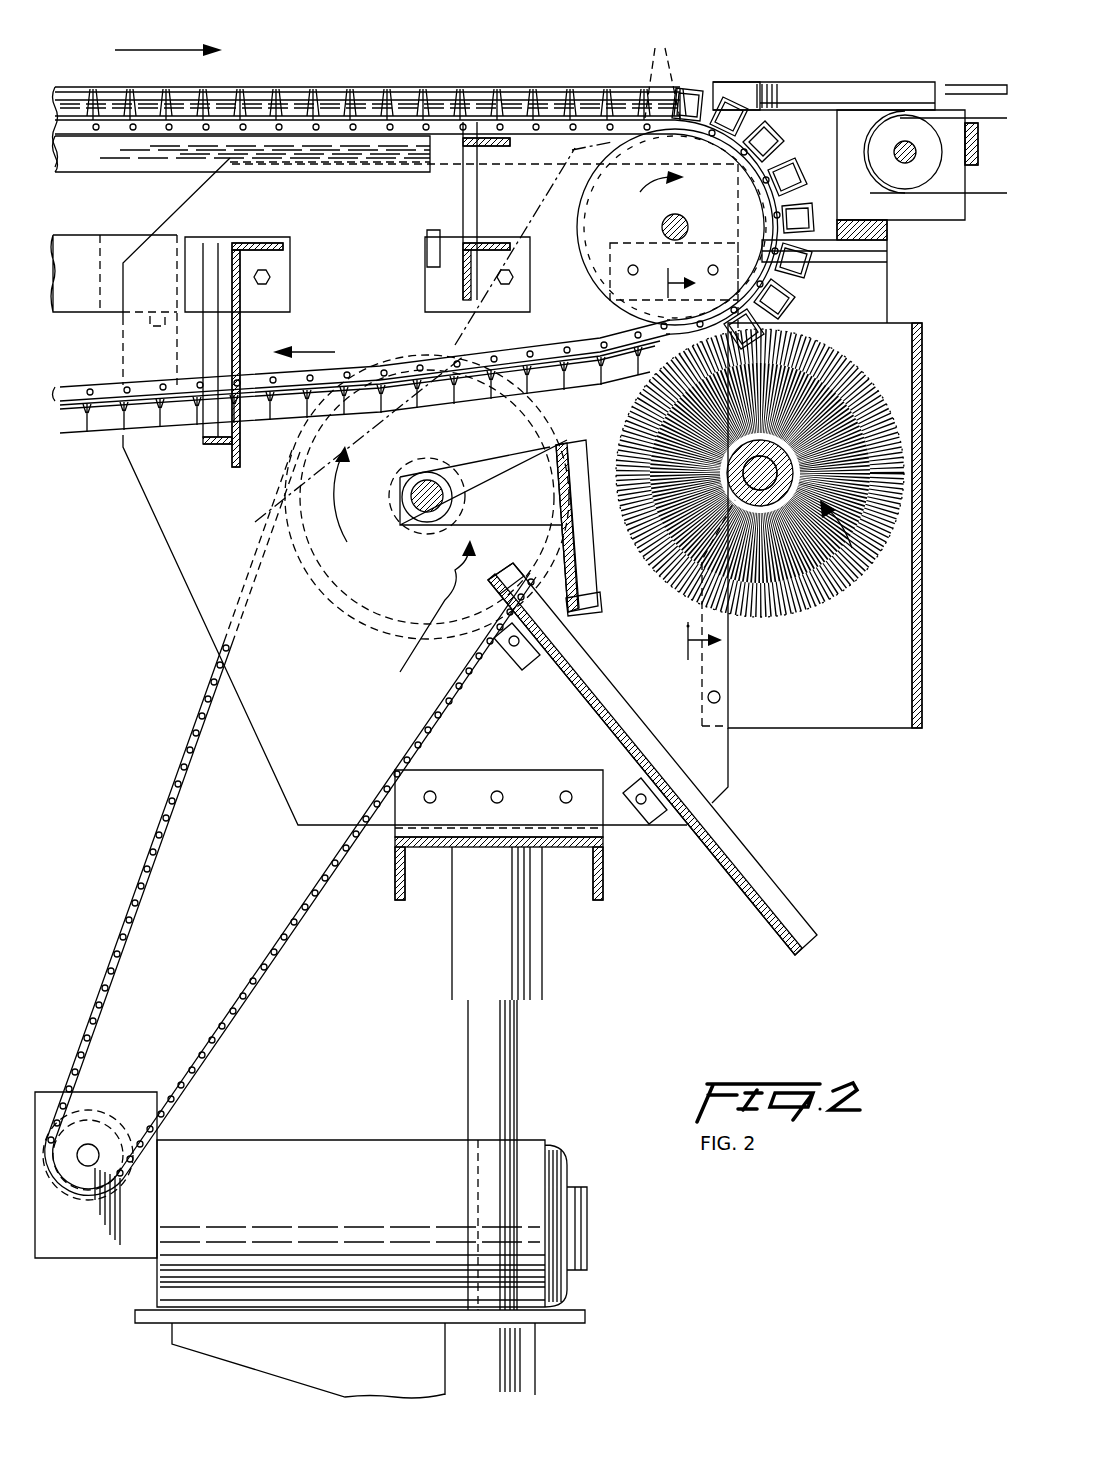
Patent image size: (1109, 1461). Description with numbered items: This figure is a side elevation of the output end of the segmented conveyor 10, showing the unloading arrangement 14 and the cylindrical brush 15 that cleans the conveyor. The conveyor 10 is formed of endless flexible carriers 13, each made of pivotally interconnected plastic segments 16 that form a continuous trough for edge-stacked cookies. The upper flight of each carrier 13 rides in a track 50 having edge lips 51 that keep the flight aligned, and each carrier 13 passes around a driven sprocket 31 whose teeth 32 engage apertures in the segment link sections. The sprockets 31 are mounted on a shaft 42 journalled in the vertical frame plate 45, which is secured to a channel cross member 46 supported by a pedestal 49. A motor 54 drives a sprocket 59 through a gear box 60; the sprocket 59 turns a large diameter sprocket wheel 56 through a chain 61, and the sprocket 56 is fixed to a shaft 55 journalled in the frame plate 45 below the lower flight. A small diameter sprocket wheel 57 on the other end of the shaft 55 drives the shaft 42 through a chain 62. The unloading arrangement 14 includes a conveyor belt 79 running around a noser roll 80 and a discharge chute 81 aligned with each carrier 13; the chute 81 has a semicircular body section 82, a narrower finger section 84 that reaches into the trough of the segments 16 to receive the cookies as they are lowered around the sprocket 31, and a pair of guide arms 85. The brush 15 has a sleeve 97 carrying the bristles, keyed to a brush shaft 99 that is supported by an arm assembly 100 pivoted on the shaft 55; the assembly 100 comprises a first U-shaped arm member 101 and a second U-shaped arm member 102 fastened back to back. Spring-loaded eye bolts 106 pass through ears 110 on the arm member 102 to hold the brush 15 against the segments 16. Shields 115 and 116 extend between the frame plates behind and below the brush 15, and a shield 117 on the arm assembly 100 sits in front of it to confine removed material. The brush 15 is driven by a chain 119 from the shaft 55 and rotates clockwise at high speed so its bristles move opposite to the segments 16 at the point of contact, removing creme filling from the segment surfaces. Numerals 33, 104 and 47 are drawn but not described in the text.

The flexible carrier 13 is at (495, 85).
The plastic segment 16 is at (342, 82).
The edge lip 51 is at (368, 120).
The track 50 is at (298, 137).
The finger section 84 is at (662, 70).
The unloading arrangement 14 is at (735, 72).
The guide arm 85 is at (740, 85).
The body section 82 is at (805, 80).
The discharge chute 81 is at (858, 78).
The noser roll 80 is at (905, 108).
The conveyor belt 79 is at (960, 118).
The pivot axis line 33 is at (533, 243).
The driven sprocket 31 is at (592, 200).
The shaft 42 is at (688, 218).
The segmented conveyor 10 is at (680, 464).
The teeth 32 is at (578, 287).
The chain 62 is at (470, 334).
The brush shaft 99 is at (885, 432).
The sleeve 97 is at (880, 505).
The cylindrical brush 15 is at (840, 568).
The shield 115 is at (922, 660).
The brush support arm 104 is at (784, 628).
The second arm member 102 is at (572, 445).
The first arm member 101 is at (498, 468).
The eye bolt 106 is at (560, 494).
The ear 110 is at (560, 540).
The shield 117 is at (590, 612).
The small diameter sprocket wheel 57 is at (420, 530).
The shaft 55 is at (402, 520).
The large diameter sprocket wheel 56 is at (300, 556).
The arm assembly 100 is at (427, 615).
The chain 119 is at (516, 668).
The mounting bracket 47 is at (447, 772).
The frame plate 45 is at (272, 752).
The chain 61 is at (302, 905).
The channel cross member 46 is at (605, 880).
The shield 116 is at (750, 896).
The sprocket 59 is at (100, 1130).
The gear box 60 is at (140, 1166).
The motor 54 is at (320, 1140).
The pedestal 49 is at (523, 1106).